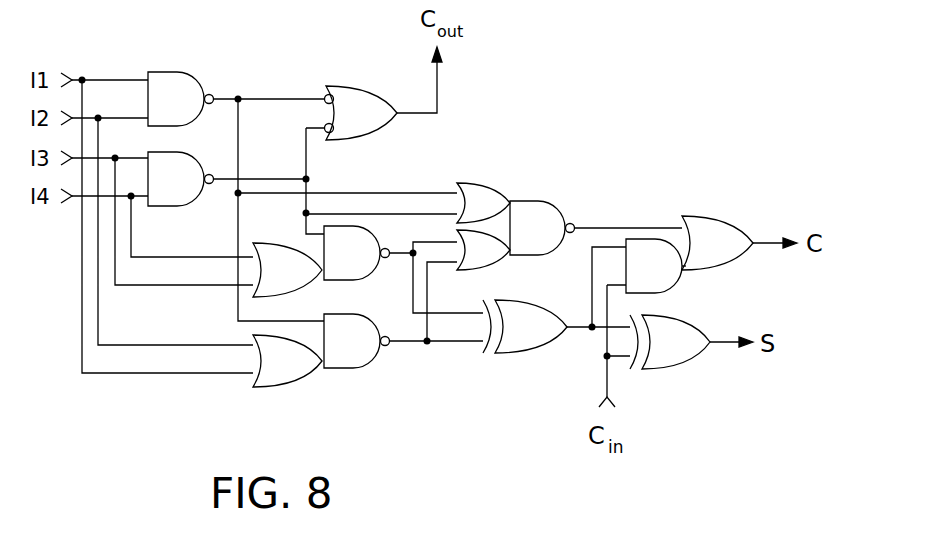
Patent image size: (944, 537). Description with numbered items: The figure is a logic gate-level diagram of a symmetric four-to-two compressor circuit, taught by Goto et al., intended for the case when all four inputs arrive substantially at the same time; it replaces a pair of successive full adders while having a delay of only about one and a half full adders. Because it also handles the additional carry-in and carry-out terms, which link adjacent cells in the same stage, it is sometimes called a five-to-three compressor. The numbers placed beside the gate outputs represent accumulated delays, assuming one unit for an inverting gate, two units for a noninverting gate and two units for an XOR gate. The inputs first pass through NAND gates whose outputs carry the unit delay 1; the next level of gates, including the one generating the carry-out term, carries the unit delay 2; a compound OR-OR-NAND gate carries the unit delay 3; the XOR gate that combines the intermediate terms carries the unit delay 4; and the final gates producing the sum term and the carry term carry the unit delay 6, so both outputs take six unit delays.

The unit delay at gate output 1 is at (189, 139).
The unit delay at gate output 2 is at (372, 227).
The unit delay at gate output 3 is at (519, 226).
The unit delay at gate output 4 is at (533, 320).
The unit delay at gate output 6 is at (700, 292).